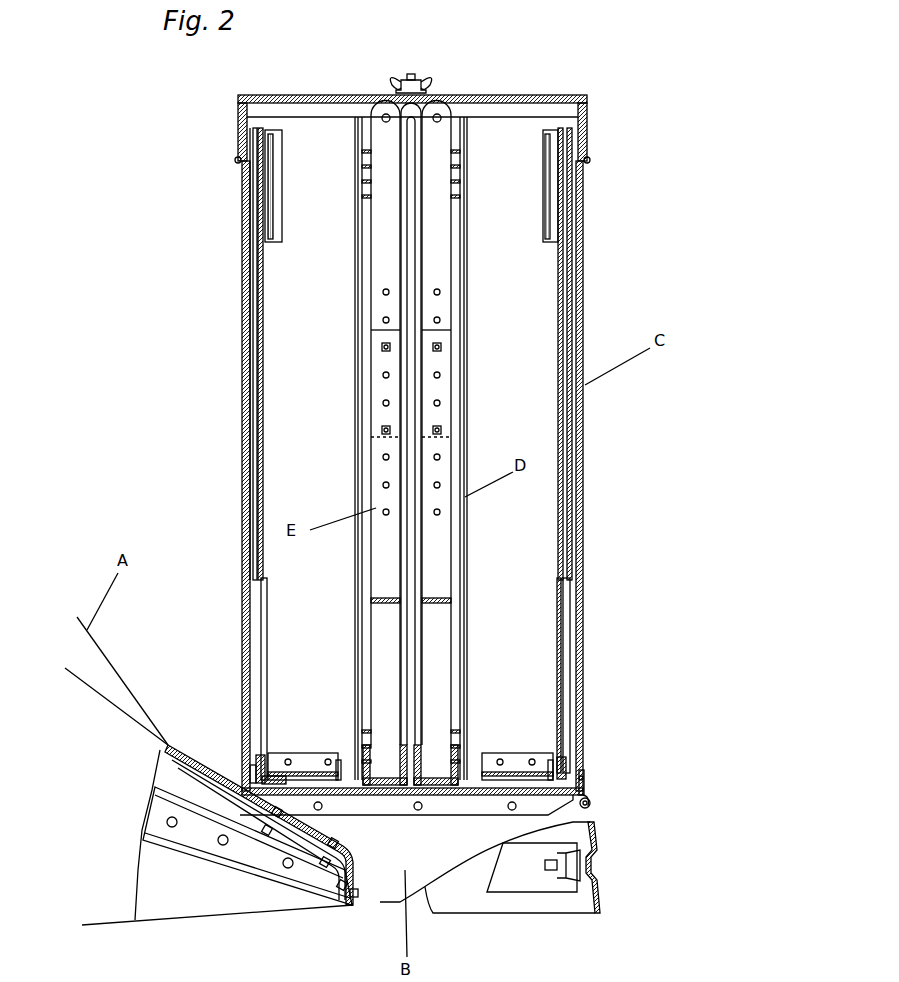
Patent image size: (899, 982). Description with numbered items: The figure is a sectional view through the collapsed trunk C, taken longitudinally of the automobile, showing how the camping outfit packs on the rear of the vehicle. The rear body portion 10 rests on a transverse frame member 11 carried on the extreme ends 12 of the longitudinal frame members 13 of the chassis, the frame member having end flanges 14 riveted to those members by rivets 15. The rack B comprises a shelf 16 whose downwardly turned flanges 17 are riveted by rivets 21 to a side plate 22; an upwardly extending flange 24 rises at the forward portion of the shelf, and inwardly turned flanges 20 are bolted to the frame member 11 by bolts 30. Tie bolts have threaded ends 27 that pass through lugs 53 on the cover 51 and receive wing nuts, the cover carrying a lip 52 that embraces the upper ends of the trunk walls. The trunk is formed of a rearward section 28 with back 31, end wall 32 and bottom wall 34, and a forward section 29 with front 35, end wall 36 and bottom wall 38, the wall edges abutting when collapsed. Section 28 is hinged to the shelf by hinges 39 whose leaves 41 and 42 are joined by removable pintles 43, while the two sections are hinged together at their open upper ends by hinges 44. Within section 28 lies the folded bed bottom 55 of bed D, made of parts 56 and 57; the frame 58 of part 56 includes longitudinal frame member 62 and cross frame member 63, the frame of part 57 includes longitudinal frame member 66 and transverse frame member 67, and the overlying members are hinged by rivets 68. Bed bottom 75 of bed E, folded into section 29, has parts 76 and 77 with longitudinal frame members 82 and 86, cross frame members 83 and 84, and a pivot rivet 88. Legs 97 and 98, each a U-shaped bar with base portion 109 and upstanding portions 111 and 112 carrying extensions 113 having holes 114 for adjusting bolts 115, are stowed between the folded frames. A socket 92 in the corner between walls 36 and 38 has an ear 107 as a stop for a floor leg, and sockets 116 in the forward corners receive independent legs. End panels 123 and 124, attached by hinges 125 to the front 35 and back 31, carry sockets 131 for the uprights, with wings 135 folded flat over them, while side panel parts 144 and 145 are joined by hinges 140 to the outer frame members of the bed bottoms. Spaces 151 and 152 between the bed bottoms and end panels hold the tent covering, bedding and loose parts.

The rear body portion 10 is at (110, 670).
The transverse frame member 11 is at (307, 838).
The extreme ends of longitudinal frame members 12 is at (277, 868).
The longitudinal frame members 13 is at (160, 826).
The end flanges 14 is at (178, 752).
The rivets 15 is at (221, 846).
The shelf 16 is at (535, 800).
The downwardly turned flanges 17 is at (464, 805).
The inwardly turned flanges 20 is at (360, 850).
The rivets 21 is at (317, 800).
The side plate 22 is at (433, 850).
The upwardly extending flange 24 is at (250, 768).
The threaded ends of tie bolts 27 is at (411, 75).
The trunk section 28 is at (568, 553).
The trunk section 29 is at (249, 332).
The bolts 30 is at (425, 82).
The back 31 is at (583, 645).
The end wall 32 is at (583, 336).
The bottom wall 34 is at (532, 760).
The front 35 is at (253, 400).
The end wall 36 is at (283, 475).
The bottom wall 38 is at (337, 760).
The hinges 39 is at (590, 800).
The hinge leaf 41 is at (584, 775).
The hinge leaf 42 is at (598, 832).
The pintle 43 is at (590, 804).
The hinges 44 is at (420, 108).
The cover 51 is at (552, 95).
The flange or lip 52 is at (240, 138).
The lugs 53 is at (406, 98).
The bed bottom 55 is at (470, 262).
The part of bed bottom 56 is at (455, 662).
The part of bed bottom 57 is at (421, 642).
The frame 58 is at (453, 213).
The longitudinal frame member 62 is at (453, 318).
The cross frame member 63 is at (462, 768).
The longitudinal frame member 66 is at (417, 252).
The transverse frame member 67 is at (419, 770).
The rivets 68 is at (440, 117).
The bed bottom 75 is at (385, 392).
The part of bed bottom 76 is at (400, 620).
The part of bed bottom 77 is at (371, 345).
The longitudinal frame member 82 is at (403, 210).
The cross frame member 83 is at (374, 768).
The cross frame member 84 is at (371, 760).
The longitudinal frame member 86 is at (367, 277).
The rivet 88 is at (384, 117).
The socket 92 is at (276, 757).
The leg 97 is at (441, 388).
The leg 98 is at (381, 420).
The ear 107 is at (480, 773).
The base portion 109 is at (388, 598).
The upstanding portion 111 is at (440, 560).
The upstanding portion 112 is at (383, 533).
The extensions 113 is at (383, 160).
The holes 114 is at (441, 320).
The bolts 115 is at (441, 347).
The sockets 116 is at (570, 760).
The end panel 123 is at (263, 658).
The end panel 124 is at (560, 668).
The hinges 125 is at (257, 768).
The sockets 131 is at (272, 165).
The wings 135 is at (262, 352).
The hinges 140 is at (456, 166).
The side panel part 144 is at (367, 482).
The side panel part 145 is at (463, 515).
The space 151 is at (293, 273).
The space 152 is at (537, 272).